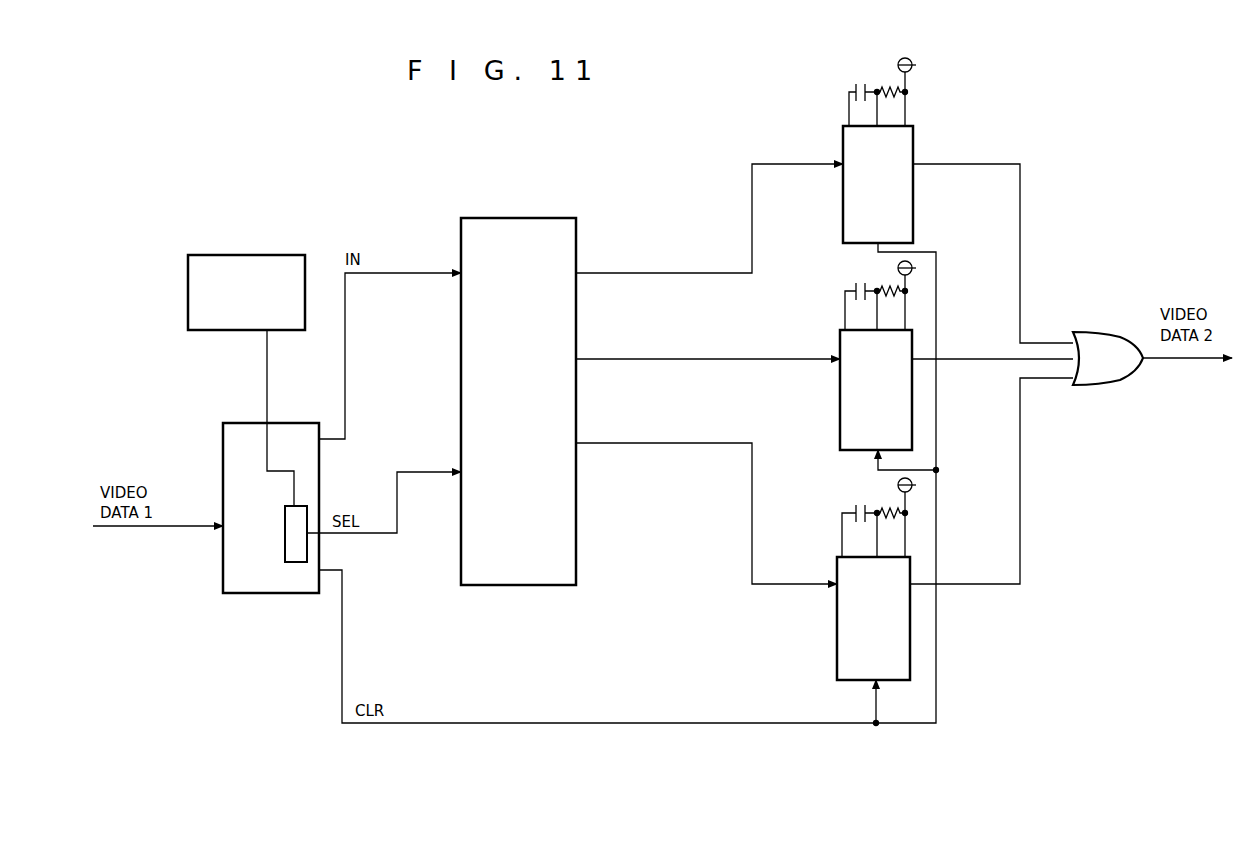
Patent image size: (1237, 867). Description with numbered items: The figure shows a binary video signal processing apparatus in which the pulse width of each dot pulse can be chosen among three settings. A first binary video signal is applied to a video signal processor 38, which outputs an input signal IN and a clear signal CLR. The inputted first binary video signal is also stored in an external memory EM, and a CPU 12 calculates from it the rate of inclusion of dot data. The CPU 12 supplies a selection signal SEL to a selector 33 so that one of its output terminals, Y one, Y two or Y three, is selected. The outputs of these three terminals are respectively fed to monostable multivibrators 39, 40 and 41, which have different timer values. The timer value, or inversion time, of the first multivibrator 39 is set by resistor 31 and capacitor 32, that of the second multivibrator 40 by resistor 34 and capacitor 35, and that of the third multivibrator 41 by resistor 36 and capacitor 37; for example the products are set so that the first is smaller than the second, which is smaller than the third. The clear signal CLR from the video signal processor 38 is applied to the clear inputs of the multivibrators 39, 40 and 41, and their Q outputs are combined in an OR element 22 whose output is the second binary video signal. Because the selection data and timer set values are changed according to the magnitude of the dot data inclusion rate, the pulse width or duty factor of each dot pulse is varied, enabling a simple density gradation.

The external memory EM is at (268, 255).
The CPU 12 is at (286, 537).
The video signal processor 38 is at (290, 593).
The selector 33 is at (500, 585).
The monostable multivibrator 39 is at (913, 220).
The monostable multivibrator 40 is at (912, 430).
The monostable multivibrator 41 is at (883, 680).
The resistor 31 is at (900, 100).
The capacitor 32 is at (860, 101).
The resistor 34 is at (883, 292).
The capacitor 35 is at (847, 284).
The resistor 36 is at (883, 514).
The capacitor 37 is at (848, 505).
The OR element 22 is at (1108, 385).